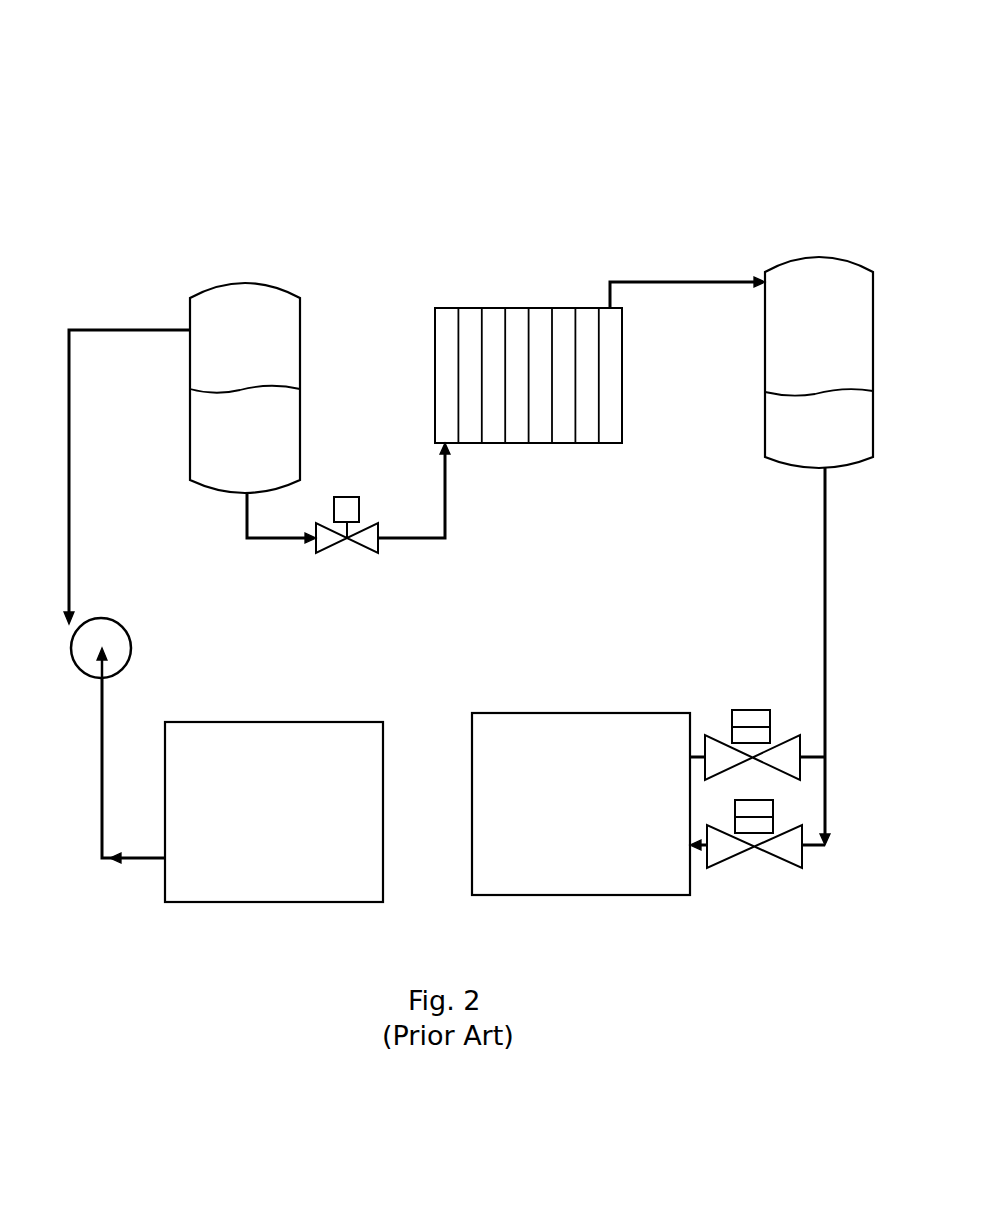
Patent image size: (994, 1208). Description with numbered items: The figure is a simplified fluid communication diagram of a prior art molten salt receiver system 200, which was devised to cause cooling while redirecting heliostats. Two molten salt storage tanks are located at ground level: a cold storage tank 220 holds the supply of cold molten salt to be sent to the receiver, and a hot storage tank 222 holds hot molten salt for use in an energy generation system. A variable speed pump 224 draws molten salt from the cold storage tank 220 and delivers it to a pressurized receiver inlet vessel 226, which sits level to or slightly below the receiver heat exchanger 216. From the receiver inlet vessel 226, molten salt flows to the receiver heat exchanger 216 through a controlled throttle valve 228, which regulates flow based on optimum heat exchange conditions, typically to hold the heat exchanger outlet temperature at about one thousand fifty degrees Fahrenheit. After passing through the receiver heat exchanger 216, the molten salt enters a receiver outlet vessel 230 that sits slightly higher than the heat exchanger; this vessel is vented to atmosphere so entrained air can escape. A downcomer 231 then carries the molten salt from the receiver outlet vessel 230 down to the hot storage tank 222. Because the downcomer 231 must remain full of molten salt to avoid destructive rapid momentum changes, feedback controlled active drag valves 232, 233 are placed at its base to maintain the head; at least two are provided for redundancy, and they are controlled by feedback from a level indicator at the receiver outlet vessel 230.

The molten salt receiver system 200 is at (573, 108).
The receiver heat exchanger 216 is at (467, 307).
The cold storage tank 220 is at (272, 720).
The hot storage tank 222 is at (585, 708).
The variable speed pump 224 is at (132, 642).
The receiver inlet vessel 226 is at (287, 288).
The throttle valve 228 is at (333, 545).
The receiver outlet vessel 230 is at (800, 257).
The downcomer 231 is at (823, 588).
The active drag valve 232 is at (757, 708).
The active drag valve 233 is at (785, 865).